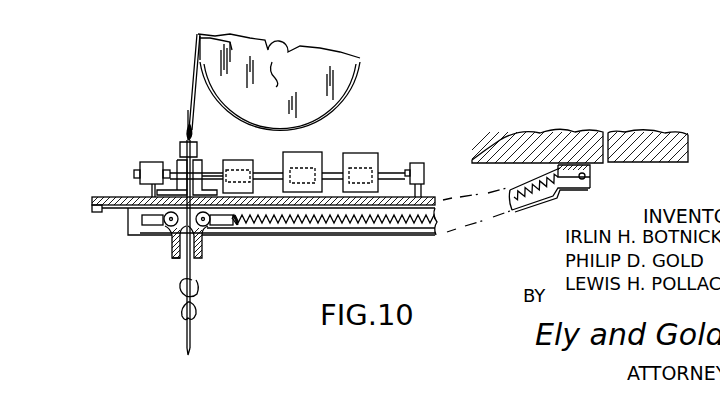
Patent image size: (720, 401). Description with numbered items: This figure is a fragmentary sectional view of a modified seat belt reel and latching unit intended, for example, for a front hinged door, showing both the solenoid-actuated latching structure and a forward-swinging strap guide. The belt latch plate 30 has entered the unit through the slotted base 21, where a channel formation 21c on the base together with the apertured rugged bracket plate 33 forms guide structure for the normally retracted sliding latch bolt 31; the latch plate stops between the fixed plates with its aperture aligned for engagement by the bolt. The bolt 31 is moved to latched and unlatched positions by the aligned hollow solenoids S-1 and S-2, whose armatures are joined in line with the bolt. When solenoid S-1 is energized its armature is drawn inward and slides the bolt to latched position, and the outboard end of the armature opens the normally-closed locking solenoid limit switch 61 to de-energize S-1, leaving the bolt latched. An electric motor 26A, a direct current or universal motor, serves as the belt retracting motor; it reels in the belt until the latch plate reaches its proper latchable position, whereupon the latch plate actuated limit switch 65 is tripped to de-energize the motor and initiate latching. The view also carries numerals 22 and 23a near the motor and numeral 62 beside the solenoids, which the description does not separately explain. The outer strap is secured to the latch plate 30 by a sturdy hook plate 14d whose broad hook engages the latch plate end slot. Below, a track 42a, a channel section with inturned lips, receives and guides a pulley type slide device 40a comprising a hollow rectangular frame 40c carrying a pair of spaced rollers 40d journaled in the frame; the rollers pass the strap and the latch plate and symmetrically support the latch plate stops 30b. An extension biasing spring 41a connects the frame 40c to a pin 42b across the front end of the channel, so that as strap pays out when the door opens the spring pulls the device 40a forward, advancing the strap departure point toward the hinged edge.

The hook plate 14d is at (198, 310).
The rail 21 is at (84, 206).
The channel formation 21c is at (243, 150).
The rod 22 is at (213, 68).
The cam lobe 23a is at (292, 76).
The electric motor 26A is at (188, 52).
The latch plate 30 is at (163, 251).
The stops 30b is at (219, 253).
The sliding latch bolt 31 is at (215, 162).
The apertured bracket plate 33 is at (180, 162).
The pulley type slide device 40a is at (124, 222).
The rectangular frame 40c is at (227, 228).
The rollers 40d is at (173, 247).
The extension biasing spring 41a is at (322, 220).
The track 42a is at (387, 232).
The pin 42b is at (590, 172).
The locking solenoid limit switch 61 is at (142, 172).
The switch 62 is at (420, 163).
The latch plate actuated limit switch 65 is at (186, 130).
The hollow solenoid S-1 is at (315, 150).
The hollow solenoid S-2 is at (368, 152).